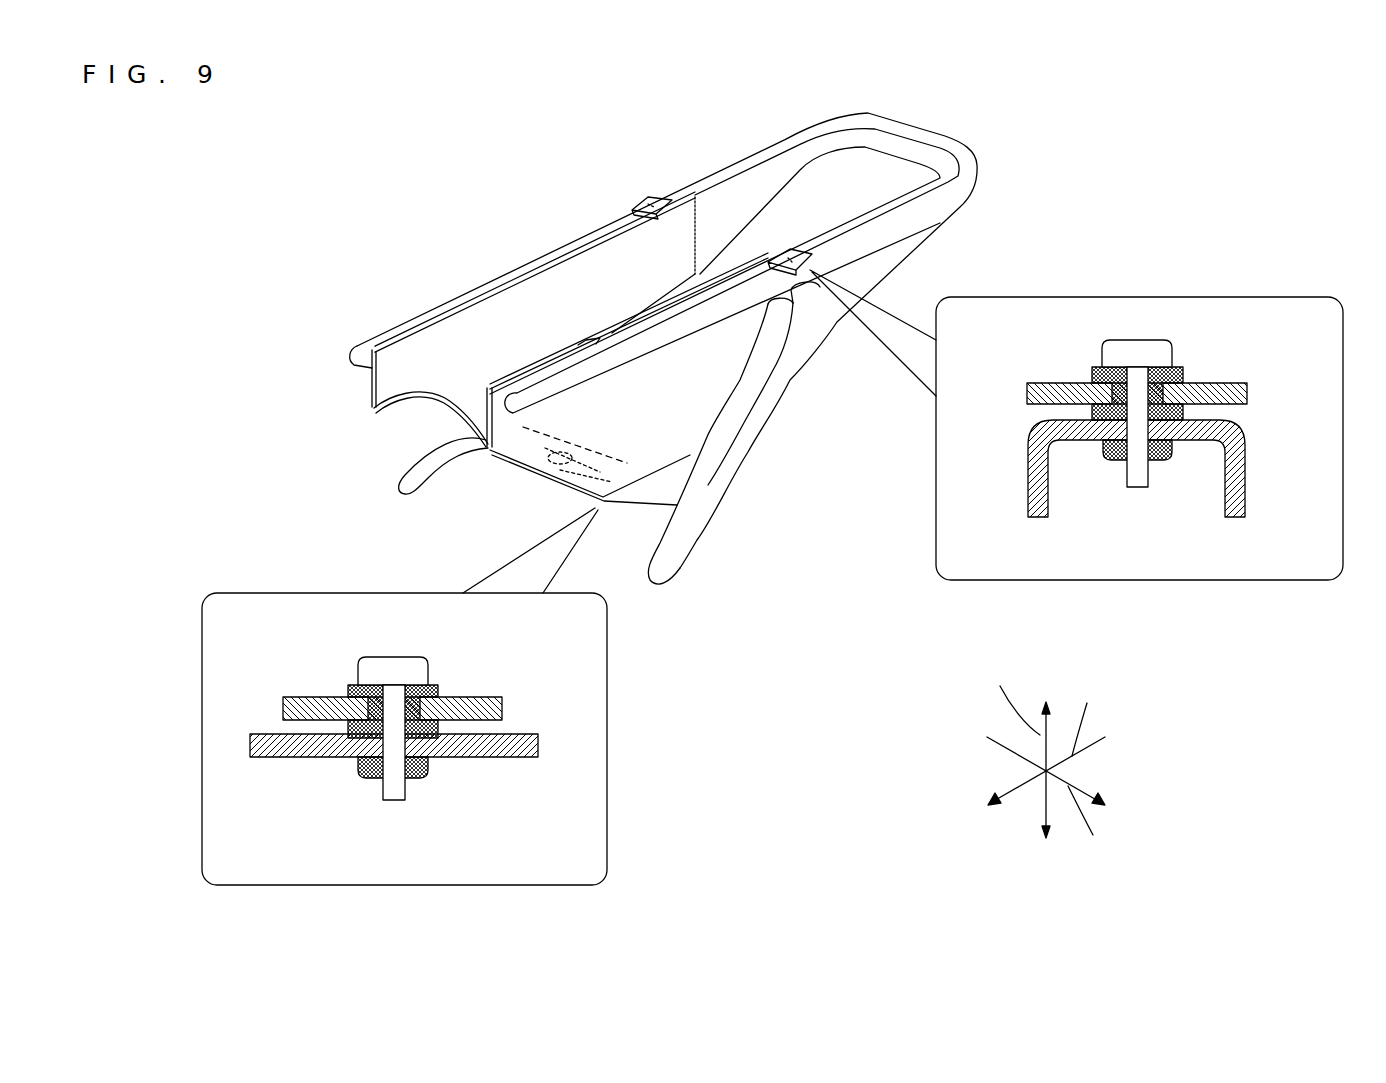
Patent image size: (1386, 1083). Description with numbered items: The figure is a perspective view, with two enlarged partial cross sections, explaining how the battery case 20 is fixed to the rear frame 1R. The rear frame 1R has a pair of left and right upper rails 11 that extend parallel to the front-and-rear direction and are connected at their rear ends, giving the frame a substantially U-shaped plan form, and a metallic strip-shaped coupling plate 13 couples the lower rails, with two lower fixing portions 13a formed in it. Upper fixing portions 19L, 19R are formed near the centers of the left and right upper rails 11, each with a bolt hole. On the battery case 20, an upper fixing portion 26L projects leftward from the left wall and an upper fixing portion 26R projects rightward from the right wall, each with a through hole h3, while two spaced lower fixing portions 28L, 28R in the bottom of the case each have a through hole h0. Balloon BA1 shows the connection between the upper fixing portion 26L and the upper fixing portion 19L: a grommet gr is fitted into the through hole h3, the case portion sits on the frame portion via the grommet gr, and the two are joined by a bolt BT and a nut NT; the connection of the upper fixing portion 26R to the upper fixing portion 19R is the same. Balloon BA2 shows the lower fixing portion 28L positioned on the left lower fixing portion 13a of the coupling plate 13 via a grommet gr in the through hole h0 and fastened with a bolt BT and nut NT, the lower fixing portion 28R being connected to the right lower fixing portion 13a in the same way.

The rear frame 1R is at (966, 116).
The upper rail 11 is at (704, 172).
The strip-shaped coupling plate 13 is at (668, 512).
The lower fixing portion 13a is at (555, 462).
The upper fixing portion 19L is at (786, 250).
The upper fixing portion 19R is at (632, 201).
The battery case 20 is at (520, 325).
The upper fixing portion 26L is at (805, 244).
The upper fixing portion 26R is at (652, 197).
The lower fixing portion 28L is at (627, 463).
The lower fixing portion 28R is at (512, 383).
The balloon BA1 is at (1318, 297).
The balloon BA2 is at (232, 593).
The bolt BT is at (1146, 356).
The nut NT is at (1172, 456).
The grommet gr is at (1183, 383).
The through hole h3 is at (1135, 368).
The through hole h0 is at (387, 690).